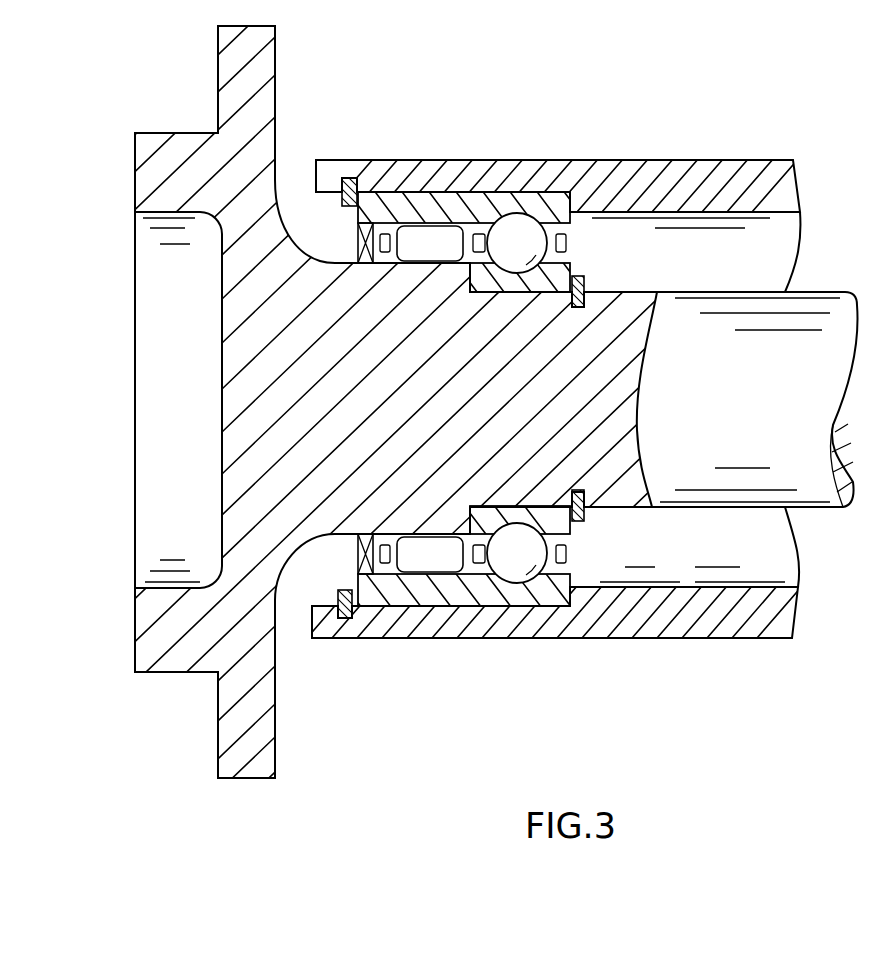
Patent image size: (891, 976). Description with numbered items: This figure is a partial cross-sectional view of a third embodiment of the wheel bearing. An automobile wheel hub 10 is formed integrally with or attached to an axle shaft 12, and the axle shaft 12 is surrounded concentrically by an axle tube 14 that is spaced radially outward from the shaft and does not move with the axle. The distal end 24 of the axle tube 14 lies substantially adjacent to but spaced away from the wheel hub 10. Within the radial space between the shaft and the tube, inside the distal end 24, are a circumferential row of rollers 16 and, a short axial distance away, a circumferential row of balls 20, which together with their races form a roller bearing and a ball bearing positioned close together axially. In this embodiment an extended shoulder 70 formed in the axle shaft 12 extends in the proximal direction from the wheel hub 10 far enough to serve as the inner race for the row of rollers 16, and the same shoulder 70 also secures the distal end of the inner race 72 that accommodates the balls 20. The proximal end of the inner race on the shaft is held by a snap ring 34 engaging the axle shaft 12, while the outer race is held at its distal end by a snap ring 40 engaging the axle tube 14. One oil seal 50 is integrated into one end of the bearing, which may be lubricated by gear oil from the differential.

The wheel hub 10 is at (135, 180).
The axle shaft 12 is at (245, 398).
The axle tube 14 is at (655, 620).
The rollers 16 is at (432, 230).
The balls 20 is at (522, 220).
The distal end 24 is at (316, 190).
The snap ring 34 is at (578, 514).
The snap ring 40 is at (345, 620).
The oil seal 50 is at (355, 563).
The extended shoulder 70 is at (437, 522).
The inner race 72 is at (572, 268).